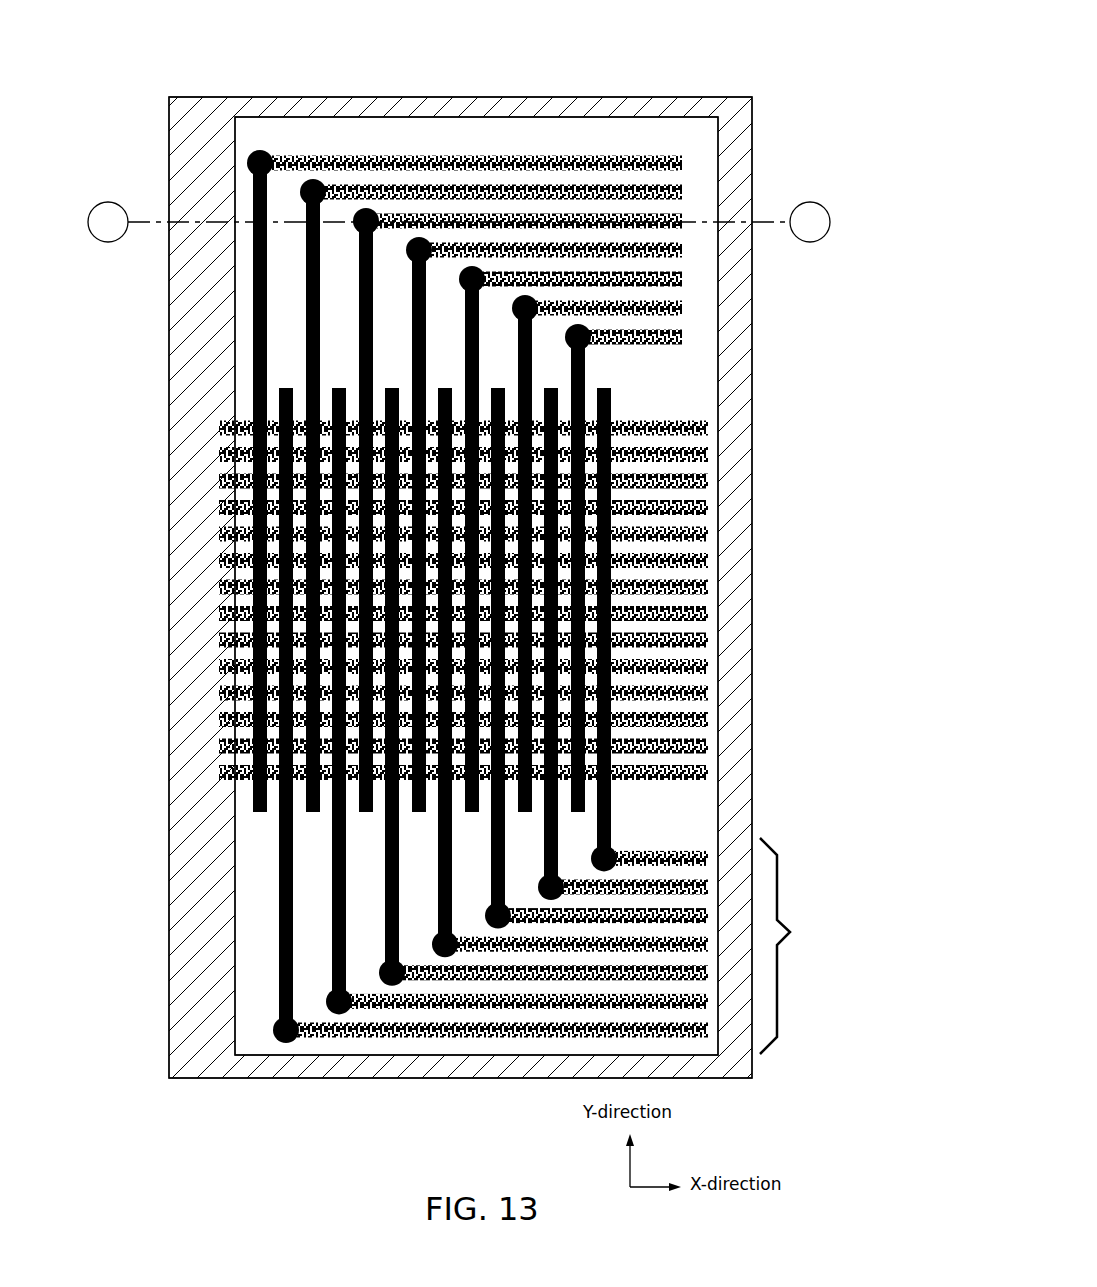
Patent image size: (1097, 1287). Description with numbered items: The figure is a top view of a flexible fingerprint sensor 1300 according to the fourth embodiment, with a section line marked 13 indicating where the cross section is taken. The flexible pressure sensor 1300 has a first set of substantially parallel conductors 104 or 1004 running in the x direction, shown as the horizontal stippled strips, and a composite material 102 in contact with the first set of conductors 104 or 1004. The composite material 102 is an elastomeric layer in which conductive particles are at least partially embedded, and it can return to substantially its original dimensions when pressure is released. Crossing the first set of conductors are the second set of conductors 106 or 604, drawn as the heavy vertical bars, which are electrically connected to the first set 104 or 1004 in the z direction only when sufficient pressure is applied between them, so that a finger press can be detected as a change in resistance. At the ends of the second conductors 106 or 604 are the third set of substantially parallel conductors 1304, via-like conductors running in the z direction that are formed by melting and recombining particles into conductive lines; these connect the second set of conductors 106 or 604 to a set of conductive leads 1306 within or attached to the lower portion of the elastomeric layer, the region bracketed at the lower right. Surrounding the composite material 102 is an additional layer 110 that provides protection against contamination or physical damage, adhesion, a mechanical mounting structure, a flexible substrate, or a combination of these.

The flexible fingerprint sensor 1300 is at (738, 40).
The composite material 102 is at (411, 133).
The additional layer 110 is at (737, 133).
The second set of conductors 106 is at (464, 596).
The second set of conductors 604 is at (611, 398).
The first set of substantially parallel conductors 104 is at (553, 597).
The first set of substantially parallel conductors 1004 is at (707, 771).
The third set of substantially parallel conductors 1304 is at (613, 850).
The set of conductive leads 1306 is at (805, 946).
The section line 13- 13 is at (459, 222).